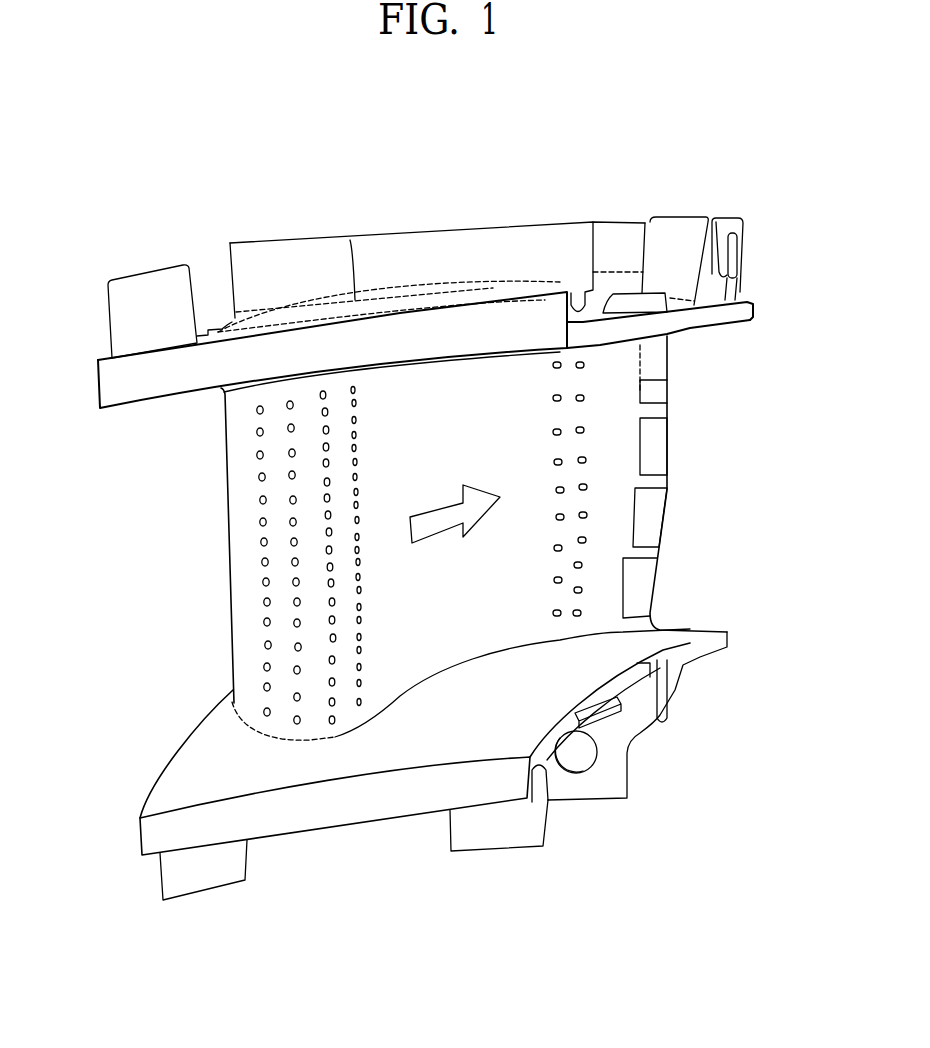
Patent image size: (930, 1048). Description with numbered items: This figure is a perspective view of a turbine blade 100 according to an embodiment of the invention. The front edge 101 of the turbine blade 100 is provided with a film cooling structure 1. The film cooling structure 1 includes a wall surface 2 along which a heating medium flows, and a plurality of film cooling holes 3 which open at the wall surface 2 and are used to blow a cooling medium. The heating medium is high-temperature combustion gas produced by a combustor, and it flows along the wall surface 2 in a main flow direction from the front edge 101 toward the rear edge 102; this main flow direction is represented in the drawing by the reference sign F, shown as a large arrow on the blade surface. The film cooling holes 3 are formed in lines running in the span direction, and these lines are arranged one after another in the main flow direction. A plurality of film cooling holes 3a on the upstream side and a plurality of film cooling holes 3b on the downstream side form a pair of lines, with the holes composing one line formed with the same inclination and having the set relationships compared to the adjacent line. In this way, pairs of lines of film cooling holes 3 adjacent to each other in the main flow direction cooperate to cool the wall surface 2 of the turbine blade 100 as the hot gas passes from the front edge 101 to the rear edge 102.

The turbine blade 100 is at (138, 267).
The film cooling structure 1 is at (248, 555).
The wall surface 2 is at (317, 630).
The film cooling holes 3 is at (382, 426).
The film cooling holes on the upstream side 3a is at (262, 478).
The film cooling holes on the downstream side 3b is at (290, 453).
The front edge 101 is at (231, 507).
The rear edge 102 is at (670, 489).
The main flow direction F is at (448, 483).